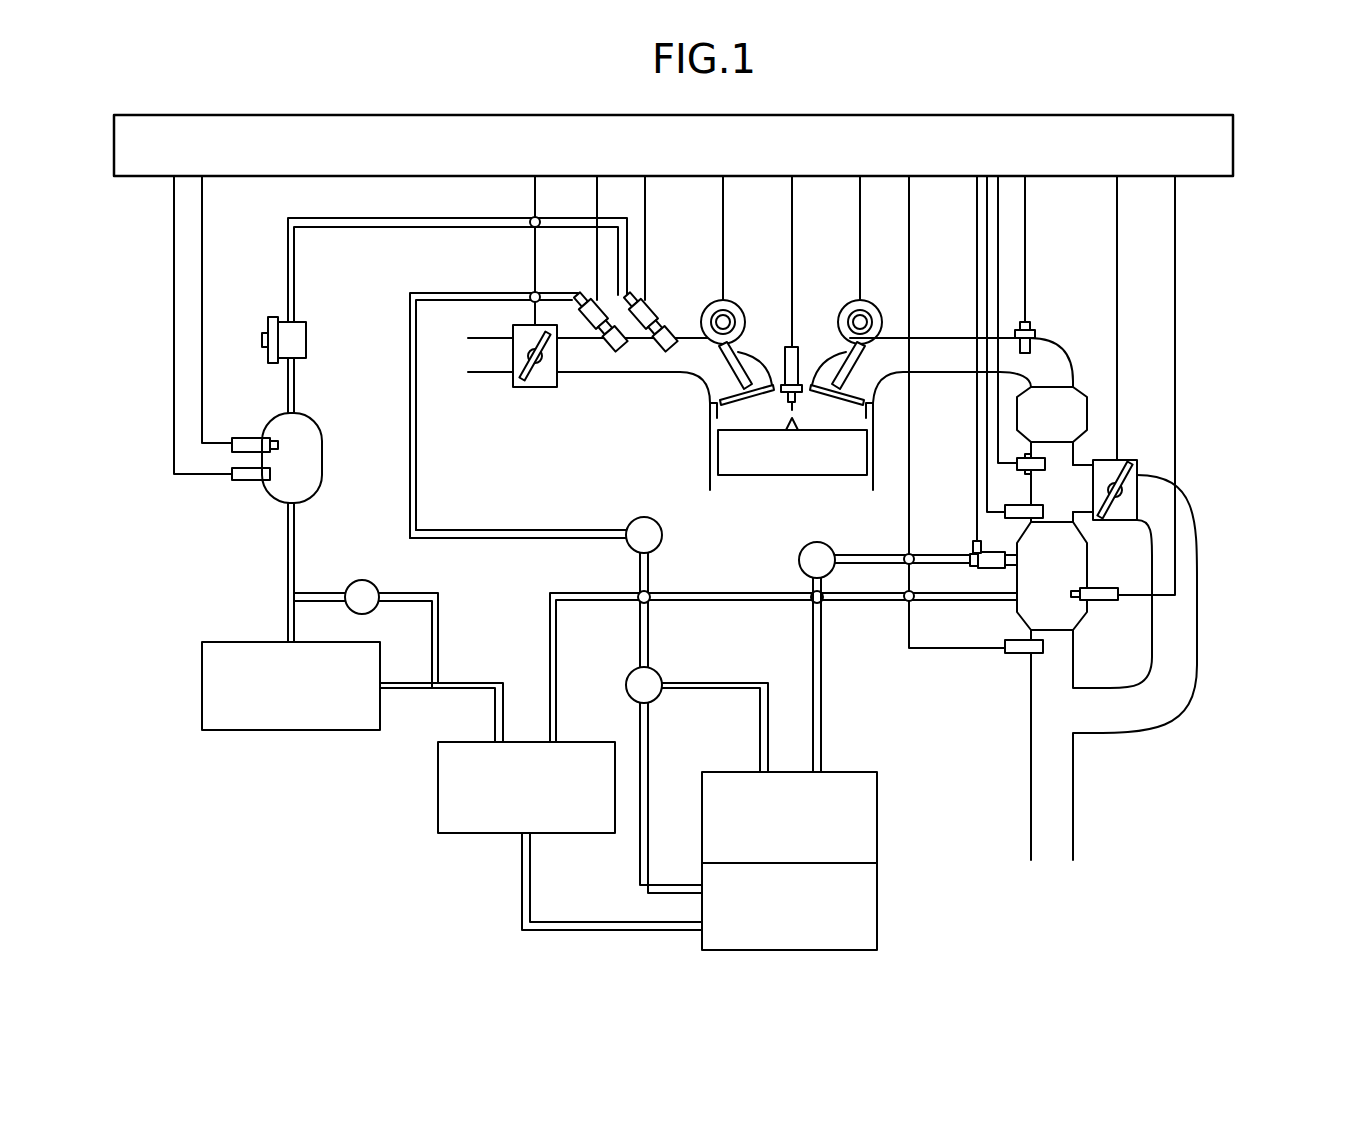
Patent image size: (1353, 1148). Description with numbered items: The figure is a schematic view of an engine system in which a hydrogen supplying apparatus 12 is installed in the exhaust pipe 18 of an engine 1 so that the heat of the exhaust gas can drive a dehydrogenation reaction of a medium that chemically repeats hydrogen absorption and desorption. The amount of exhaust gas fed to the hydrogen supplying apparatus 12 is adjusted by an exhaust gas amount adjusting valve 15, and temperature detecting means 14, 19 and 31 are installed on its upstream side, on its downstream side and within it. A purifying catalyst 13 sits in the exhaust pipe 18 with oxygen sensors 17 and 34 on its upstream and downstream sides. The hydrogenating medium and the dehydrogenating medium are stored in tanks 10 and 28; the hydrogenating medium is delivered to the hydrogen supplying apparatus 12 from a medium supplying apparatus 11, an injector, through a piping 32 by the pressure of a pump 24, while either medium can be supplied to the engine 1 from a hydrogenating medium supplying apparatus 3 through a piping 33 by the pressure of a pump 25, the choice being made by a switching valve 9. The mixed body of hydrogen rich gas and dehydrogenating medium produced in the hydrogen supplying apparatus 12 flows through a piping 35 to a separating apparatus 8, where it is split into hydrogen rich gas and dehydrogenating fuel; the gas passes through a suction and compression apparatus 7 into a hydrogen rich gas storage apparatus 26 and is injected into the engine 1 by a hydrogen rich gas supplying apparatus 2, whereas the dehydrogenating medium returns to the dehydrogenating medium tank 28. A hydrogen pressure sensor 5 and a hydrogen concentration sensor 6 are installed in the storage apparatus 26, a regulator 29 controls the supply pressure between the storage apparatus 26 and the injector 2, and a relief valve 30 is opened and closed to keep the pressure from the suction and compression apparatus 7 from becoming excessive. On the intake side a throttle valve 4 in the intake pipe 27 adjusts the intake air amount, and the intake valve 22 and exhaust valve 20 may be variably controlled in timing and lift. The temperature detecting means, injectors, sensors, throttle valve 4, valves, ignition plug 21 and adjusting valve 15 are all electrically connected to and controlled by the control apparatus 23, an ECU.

The engine 1 is at (710, 428).
The hydrogen rich gas supplying apparatus (injector) 2 is at (658, 299).
The hydrogenating medium supplying apparatus (injector) 3 is at (579, 290).
The throttle valve 4 is at (535, 389).
The hydrogen pressure sensor 5 is at (242, 434).
The hydrogen concentration sensor 6 is at (244, 484).
The suction and compression apparatus 7 is at (202, 688).
The separating apparatus 8 is at (438, 786).
The switching valve 9 is at (626, 686).
The hydrogenating medium tank 10 is at (877, 816).
The medium supplying apparatus (injector) 11 is at (968, 546).
The hydrogen supplying apparatus 12 is at (1088, 560).
The purifying catalyst 13 is at (1088, 404).
The temperature detecting means 14 is at (1005, 506).
The exhaust gas amount adjusting valve 15 is at (1137, 490).
The oxygen sensor 17 is at (1031, 323).
The exhaust pipe 18 is at (938, 330).
The temperature detecting means 19 is at (1020, 656).
The exhaust valve 20 is at (848, 298).
The ignition plug 21 is at (798, 348).
The intake valve 22 is at (740, 300).
The control apparatus (ECU) 23 is at (1236, 148).
The pump 24 is at (798, 560).
The pump 25 is at (644, 516).
The hydrogen rich gas storage apparatus 26 is at (324, 458).
The intake pipe 27 is at (478, 380).
The dehydrogenating medium tank 28 is at (877, 905).
The regulator 29 is at (308, 338).
The relief valve 30 is at (362, 578).
The temperature detecting means 31 is at (1103, 603).
The piping 32 is at (857, 552).
The piping 33 is at (505, 529).
The oxygen sensor 34 is at (1045, 464).
The piping 35 is at (715, 602).